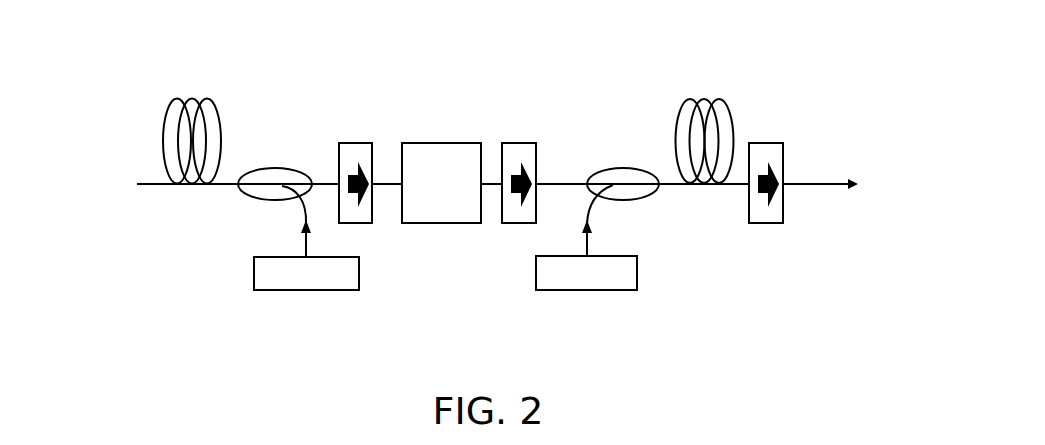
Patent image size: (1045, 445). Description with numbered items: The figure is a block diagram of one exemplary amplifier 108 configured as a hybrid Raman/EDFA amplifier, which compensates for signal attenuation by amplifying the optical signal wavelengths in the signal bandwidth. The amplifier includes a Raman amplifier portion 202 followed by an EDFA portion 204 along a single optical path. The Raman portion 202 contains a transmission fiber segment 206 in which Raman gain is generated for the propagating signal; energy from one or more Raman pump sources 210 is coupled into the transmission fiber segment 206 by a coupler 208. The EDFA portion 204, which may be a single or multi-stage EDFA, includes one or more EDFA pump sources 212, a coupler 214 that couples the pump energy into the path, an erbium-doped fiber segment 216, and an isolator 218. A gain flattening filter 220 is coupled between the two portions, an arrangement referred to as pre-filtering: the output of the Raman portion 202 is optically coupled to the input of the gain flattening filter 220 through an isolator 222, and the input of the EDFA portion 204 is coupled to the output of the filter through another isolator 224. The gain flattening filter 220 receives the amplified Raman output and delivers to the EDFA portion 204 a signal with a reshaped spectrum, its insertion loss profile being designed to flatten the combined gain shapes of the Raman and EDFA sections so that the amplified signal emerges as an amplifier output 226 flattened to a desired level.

The amplifier 108 is at (383, 73).
The Raman amplifier portion 202 is at (222, 216).
The EDFA portion 204 is at (671, 218).
The transmission fiber segment 206 is at (207, 100).
The coupler 208 is at (273, 167).
The Raman pump sources 210 is at (303, 290).
The EDFA pump sources 212 is at (608, 290).
The coupler 214 is at (623, 167).
The erbium-doped fiber segment 216 is at (683, 104).
The isolator 218 is at (768, 143).
The gain flattening filter 220 is at (440, 143).
The isolator 222 is at (360, 223).
The isolator 224 is at (520, 224).
The amplifier output 226 is at (812, 183).